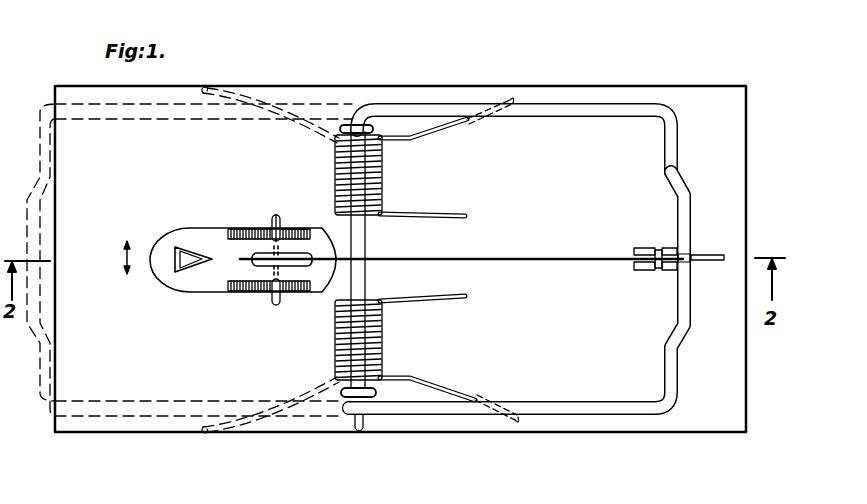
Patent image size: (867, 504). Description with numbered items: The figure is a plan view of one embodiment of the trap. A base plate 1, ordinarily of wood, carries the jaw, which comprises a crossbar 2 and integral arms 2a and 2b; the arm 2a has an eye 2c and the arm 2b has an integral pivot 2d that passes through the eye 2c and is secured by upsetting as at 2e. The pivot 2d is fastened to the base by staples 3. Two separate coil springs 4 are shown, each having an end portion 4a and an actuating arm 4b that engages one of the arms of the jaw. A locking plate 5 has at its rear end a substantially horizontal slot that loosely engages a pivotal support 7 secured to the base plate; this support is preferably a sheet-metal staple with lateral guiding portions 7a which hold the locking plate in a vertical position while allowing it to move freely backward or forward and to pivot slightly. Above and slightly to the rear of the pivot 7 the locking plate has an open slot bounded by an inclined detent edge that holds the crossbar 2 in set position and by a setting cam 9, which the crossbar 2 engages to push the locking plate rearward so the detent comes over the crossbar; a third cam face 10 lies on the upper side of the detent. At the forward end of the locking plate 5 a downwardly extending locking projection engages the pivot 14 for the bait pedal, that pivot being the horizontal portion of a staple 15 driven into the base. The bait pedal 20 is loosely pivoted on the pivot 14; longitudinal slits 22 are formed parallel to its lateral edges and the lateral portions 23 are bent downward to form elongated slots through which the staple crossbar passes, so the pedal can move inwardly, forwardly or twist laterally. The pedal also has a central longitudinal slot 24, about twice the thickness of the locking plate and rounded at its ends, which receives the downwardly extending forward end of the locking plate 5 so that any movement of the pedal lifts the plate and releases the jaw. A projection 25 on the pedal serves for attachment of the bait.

The base plate 1 is at (712, 414).
The crossbar 2 is at (686, 291).
The arm of the jaw 2a is at (545, 403).
The arm of the jaw 2b is at (525, 116).
The eye 2c is at (342, 410).
The pivot 2d is at (367, 243).
The upset portion 2e is at (358, 430).
The staple 3 is at (343, 125).
The coil spring 4 is at (380, 178).
The end portion of coil spring 4a is at (428, 212).
The actuating arm of coil spring 4b is at (445, 127).
The locking plate 5 is at (483, 258).
The pivotal support 7 is at (659, 250).
The lateral guiding portions 7a is at (657, 261).
The setting cam 9 is at (698, 256).
The third cam face 10 is at (685, 253).
The pivot for the bait pedal 14 is at (283, 230).
The staple 15 is at (276, 216).
The bait pedal 20 is at (202, 242).
The longitudinal slits 22 is at (253, 246).
The lateral portions 23 is at (263, 228).
The longitudinal slot 24 is at (255, 272).
The projection for attachment of bait 25 is at (177, 264).